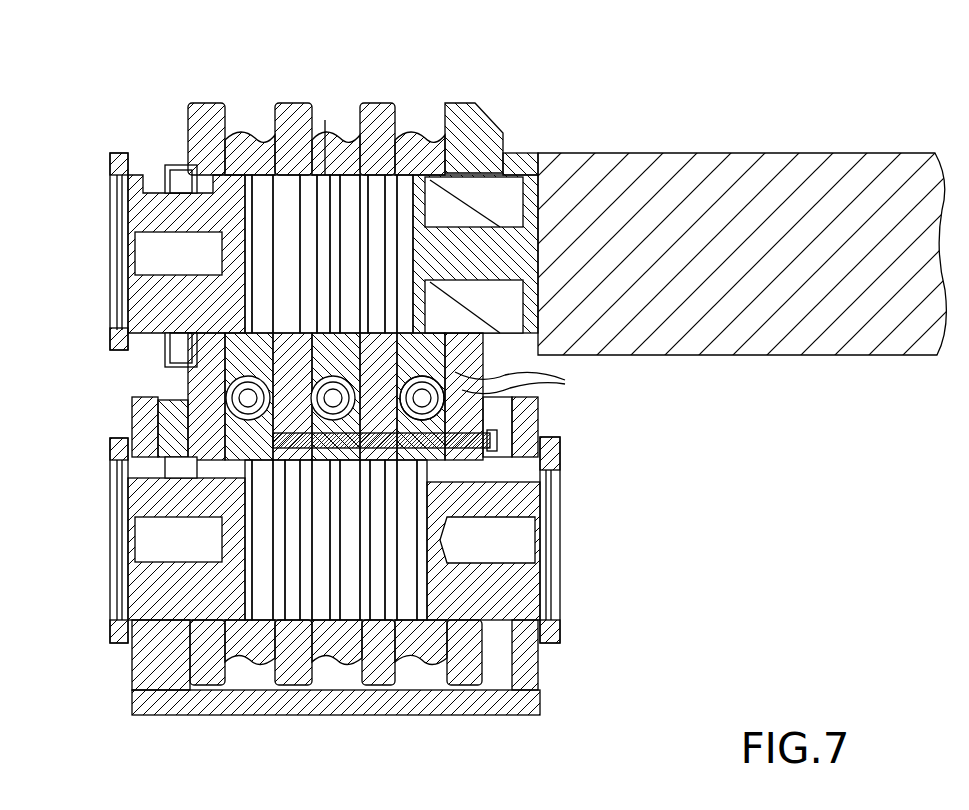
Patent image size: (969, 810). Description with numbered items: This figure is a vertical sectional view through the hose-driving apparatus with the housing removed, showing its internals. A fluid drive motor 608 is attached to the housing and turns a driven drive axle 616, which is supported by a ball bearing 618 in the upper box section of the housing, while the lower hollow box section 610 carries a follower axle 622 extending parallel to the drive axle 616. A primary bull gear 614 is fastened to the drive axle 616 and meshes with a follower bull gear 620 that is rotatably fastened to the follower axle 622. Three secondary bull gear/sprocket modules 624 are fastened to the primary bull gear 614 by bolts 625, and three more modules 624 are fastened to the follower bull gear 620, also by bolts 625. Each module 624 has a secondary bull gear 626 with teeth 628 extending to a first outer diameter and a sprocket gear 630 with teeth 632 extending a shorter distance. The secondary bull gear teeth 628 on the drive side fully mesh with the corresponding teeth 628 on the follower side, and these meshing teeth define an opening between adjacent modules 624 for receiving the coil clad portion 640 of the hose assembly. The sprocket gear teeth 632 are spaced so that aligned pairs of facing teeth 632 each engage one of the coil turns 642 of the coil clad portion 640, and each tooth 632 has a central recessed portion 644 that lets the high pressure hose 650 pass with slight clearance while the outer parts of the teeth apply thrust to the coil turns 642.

The fluid drive motor 608 is at (682, 356).
The lower hollow box section 610 is at (160, 675).
The primary bull gear 614 is at (503, 120).
The drive axle 616 is at (490, 235).
The ball bearing 618 is at (218, 188).
The follower bull gear 620 is at (490, 668).
The follower axle 622 is at (548, 495).
The secondary bull gear/sprocket module 624 is at (226, 108).
The bolt 625 is at (128, 187).
The secondary bull gear 626 is at (290, 100).
The secondary bull gear teeth 628 is at (196, 103).
The sprocket gear 630 is at (345, 112).
The sprocket gear teeth 632 is at (325, 120).
The coil clad portion 640 is at (228, 400).
The coil turns 642 is at (132, 455).
The central recessed portion 644 is at (425, 120).
The high pressure hose 650 is at (430, 382).